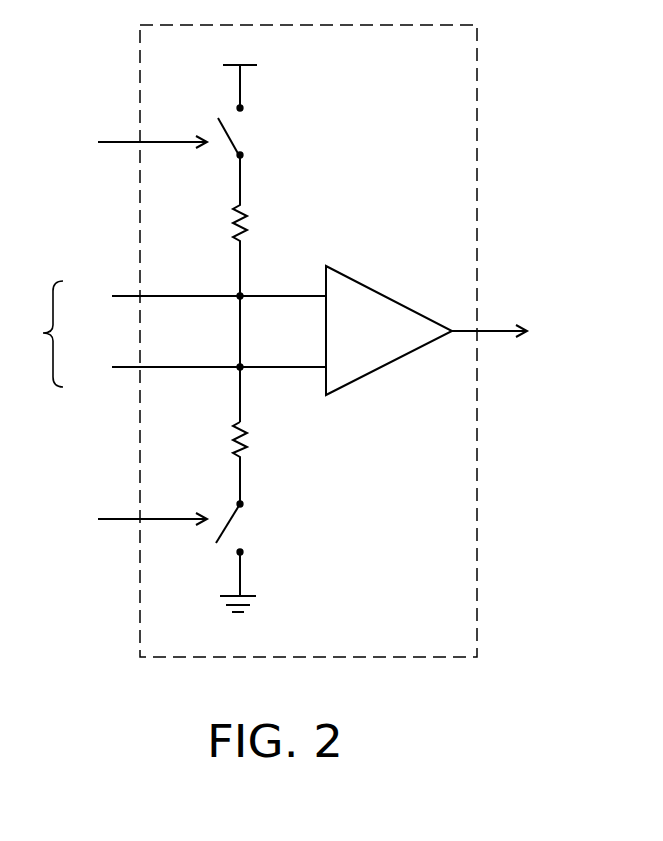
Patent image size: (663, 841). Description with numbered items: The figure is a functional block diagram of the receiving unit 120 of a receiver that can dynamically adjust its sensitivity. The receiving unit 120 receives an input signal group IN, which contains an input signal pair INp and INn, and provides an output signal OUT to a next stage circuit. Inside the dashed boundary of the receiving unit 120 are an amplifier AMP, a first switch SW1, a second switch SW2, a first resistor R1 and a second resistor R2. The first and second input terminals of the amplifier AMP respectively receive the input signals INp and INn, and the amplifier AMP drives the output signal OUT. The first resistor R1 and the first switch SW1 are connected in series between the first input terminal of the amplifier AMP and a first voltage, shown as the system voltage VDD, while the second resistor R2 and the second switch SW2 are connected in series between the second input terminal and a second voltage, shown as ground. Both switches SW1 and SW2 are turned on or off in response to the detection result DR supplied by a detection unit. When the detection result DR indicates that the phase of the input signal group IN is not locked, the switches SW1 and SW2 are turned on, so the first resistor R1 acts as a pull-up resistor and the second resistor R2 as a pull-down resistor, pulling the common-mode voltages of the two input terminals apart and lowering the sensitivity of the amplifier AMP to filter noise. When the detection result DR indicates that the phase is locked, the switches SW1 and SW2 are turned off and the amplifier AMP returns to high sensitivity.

The receiving unit 120 is at (477, 497).
The system voltage VDD is at (240, 72).
The first switch SW1 is at (240, 128).
The second switch SW2 is at (243, 529).
The first resistor R1 is at (250, 228).
The second resistor R2 is at (245, 433).
The amplifier AMP is at (390, 363).
The detection result DR is at (133, 331).
The input signal group IN is at (35, 334).
The input signal INp is at (199, 297).
The input signal INn is at (199, 372).
The output signal OUT is at (514, 337).